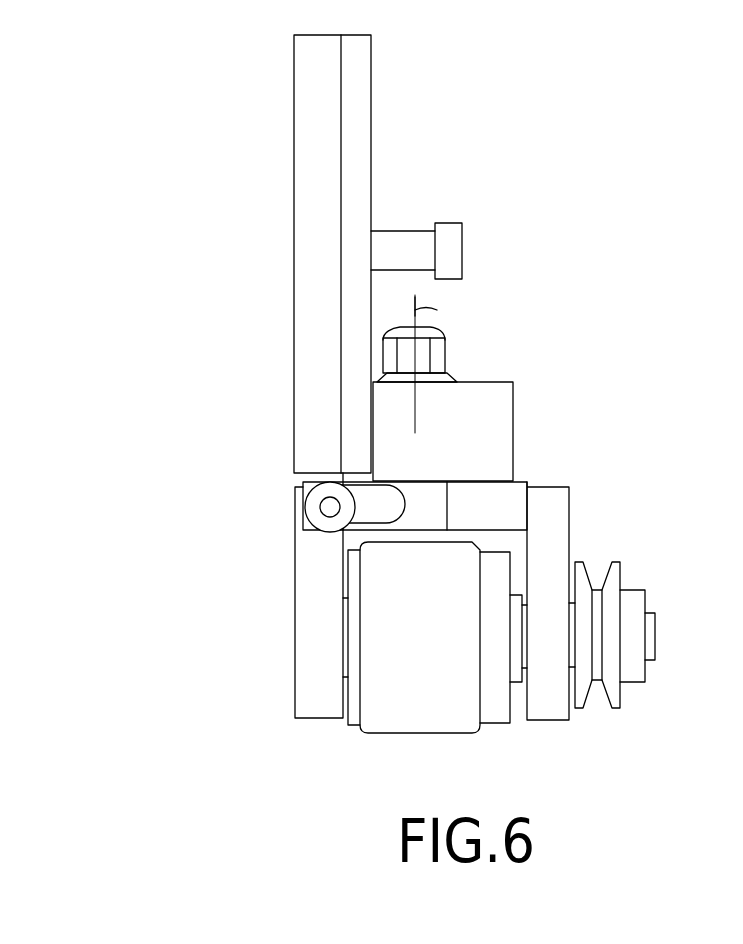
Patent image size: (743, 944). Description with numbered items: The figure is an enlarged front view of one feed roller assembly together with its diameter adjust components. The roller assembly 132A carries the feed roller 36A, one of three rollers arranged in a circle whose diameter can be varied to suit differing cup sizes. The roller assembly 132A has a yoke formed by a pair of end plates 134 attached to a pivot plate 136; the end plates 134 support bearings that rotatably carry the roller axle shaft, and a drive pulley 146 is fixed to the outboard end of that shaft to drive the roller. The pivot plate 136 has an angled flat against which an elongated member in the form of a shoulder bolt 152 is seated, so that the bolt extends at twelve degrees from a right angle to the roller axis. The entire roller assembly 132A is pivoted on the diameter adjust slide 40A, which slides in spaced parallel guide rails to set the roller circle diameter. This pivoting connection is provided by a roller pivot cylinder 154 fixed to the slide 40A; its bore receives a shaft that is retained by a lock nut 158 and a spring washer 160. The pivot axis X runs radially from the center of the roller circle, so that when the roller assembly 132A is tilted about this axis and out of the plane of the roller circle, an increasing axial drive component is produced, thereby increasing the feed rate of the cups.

The diameter adjust slide 40A is at (306, 127).
The lock nut 158 is at (441, 348).
The spring washer 160 is at (452, 376).
The roller pivot cylinder 154 is at (515, 413).
The pivot plate 136 is at (511, 492).
The end plates 134 is at (570, 505).
The shoulder bolt 152 is at (381, 499).
The drive pulley 146 is at (621, 577).
The roller assembly 132A is at (431, 610).
The feed roller 36A is at (419, 721).